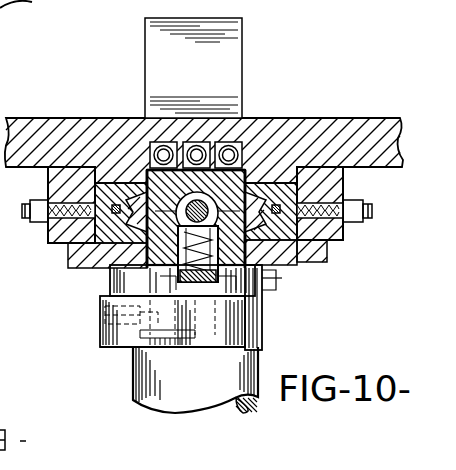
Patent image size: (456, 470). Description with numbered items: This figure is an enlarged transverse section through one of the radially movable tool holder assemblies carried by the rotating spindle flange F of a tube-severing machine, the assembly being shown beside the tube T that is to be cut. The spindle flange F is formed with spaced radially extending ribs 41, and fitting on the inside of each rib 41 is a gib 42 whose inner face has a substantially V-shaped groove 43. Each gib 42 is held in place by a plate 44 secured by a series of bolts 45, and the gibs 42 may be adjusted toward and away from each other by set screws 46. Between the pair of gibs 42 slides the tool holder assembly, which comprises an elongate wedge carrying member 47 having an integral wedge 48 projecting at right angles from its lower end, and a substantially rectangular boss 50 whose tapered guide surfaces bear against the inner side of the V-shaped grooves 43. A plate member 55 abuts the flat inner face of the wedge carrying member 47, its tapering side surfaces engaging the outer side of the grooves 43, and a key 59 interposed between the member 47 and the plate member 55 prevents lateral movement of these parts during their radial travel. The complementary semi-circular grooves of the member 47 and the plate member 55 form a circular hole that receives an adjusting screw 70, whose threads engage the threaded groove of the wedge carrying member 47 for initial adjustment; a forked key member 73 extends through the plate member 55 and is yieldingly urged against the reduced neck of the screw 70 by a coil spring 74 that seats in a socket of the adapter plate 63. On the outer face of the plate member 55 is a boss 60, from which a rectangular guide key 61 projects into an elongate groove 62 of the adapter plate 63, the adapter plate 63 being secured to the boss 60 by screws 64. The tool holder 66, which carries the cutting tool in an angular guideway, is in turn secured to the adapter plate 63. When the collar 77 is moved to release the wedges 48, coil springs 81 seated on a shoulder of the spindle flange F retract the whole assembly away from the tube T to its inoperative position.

The spindle flange F is at (391, 171).
The tube T is at (178, 409).
The ribs 41 is at (48, 184).
The gib 42 is at (300, 158).
The V-shaped groove 43 is at (280, 158).
The plate 44 is at (296, 268).
The bolts 45 is at (335, 262).
The set screws 46 is at (48, 212).
The wedge carrying member 47 is at (257, 145).
The wedge 48 is at (242, 30).
The boss 50 is at (130, 150).
The plate member 55 is at (110, 263).
The key 59 is at (112, 157).
The boss 60 is at (115, 280).
The guide key 61 is at (270, 290).
The groove 62 is at (262, 316).
The adapter plate 63 is at (110, 308).
The screws 64 is at (100, 320).
The tool holder 66 is at (114, 350).
The adjusting screw 70 is at (344, 169).
The key member 73 is at (280, 292).
The coil spring 74 is at (196, 282).
The collar 77 is at (327, 255).
The coil springs 81 is at (221, 143).